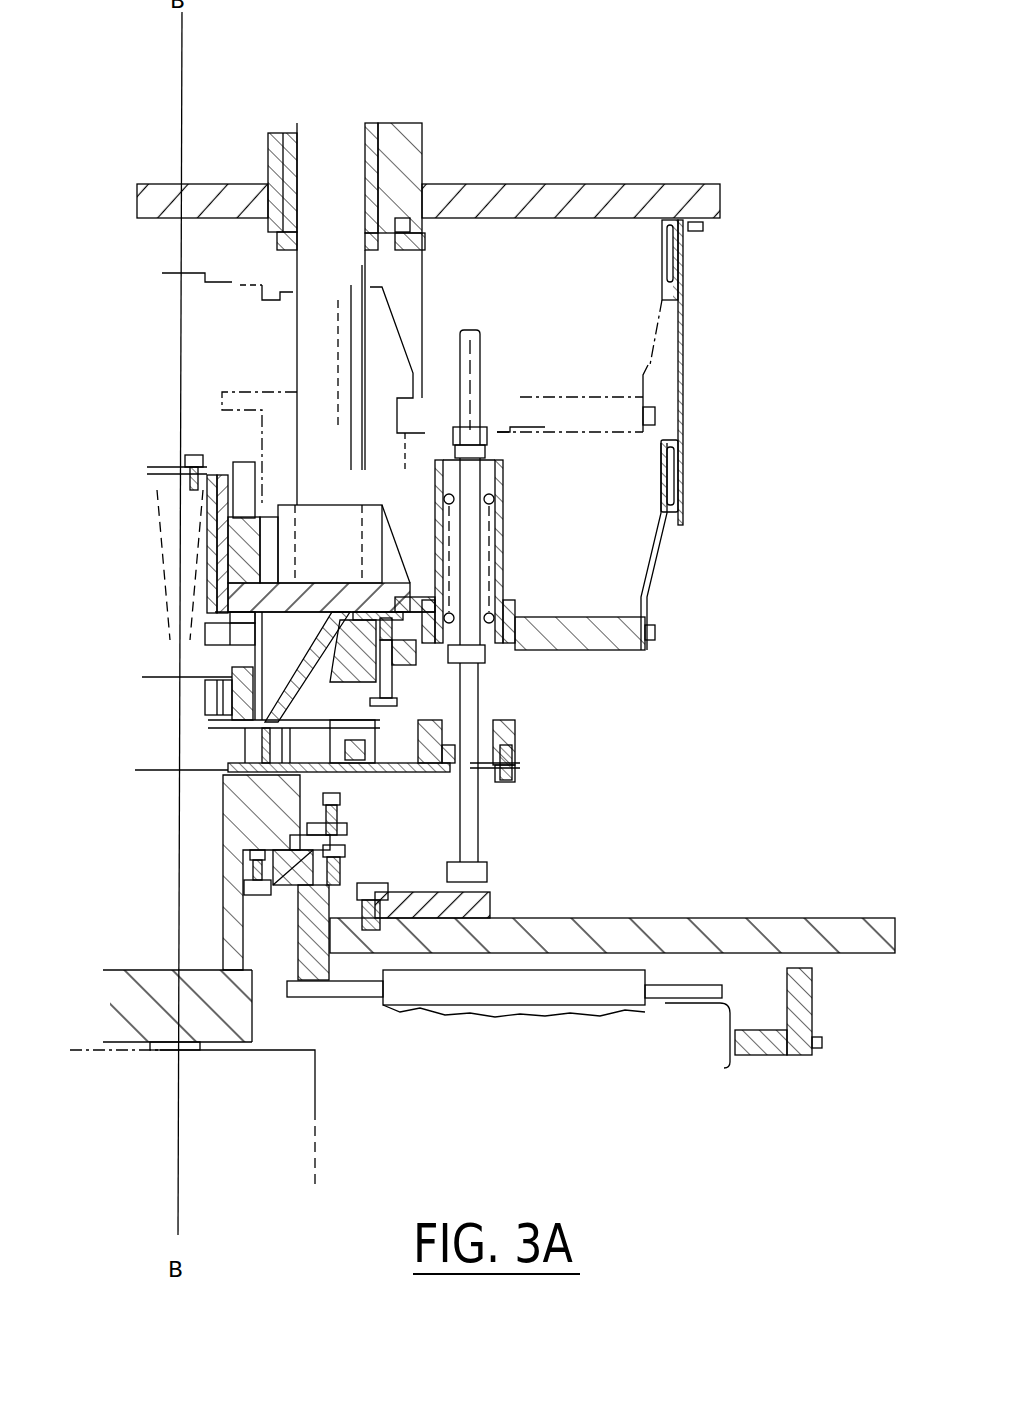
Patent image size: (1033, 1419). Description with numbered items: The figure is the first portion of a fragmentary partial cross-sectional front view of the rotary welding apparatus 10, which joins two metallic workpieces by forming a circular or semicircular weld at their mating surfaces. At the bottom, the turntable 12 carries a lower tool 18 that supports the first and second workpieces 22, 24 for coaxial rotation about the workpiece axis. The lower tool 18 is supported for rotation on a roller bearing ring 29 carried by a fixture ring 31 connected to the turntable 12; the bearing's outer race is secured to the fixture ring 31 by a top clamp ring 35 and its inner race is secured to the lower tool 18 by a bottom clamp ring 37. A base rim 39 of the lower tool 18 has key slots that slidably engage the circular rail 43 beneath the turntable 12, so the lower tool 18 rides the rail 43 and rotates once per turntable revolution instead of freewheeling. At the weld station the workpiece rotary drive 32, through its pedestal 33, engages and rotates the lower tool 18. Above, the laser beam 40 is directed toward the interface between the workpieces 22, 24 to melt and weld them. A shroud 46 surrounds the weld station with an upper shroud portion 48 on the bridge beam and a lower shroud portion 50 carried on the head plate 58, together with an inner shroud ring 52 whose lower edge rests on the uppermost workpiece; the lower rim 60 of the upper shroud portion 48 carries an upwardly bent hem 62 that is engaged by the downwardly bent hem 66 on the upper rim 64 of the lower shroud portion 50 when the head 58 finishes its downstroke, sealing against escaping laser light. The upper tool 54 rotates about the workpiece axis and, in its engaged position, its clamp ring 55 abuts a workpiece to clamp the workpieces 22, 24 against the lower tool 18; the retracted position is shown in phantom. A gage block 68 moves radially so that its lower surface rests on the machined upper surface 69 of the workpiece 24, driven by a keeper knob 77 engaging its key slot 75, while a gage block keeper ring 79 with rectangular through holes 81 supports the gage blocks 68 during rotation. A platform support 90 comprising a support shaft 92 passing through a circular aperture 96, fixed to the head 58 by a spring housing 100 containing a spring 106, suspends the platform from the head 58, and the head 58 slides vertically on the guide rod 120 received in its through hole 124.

The rotary welding apparatus 10 is at (598, 108).
The turntable 12 is at (708, 925).
The lower tool 18 is at (340, 826).
The first workpiece 22 is at (294, 670).
The second workpiece 24 is at (236, 760).
The roller bearing ring 29 is at (370, 1003).
The fixture ring 31 is at (460, 905).
The workpiece rotary drive 32 is at (283, 1093).
The pedestal 33 is at (240, 1023).
The top clamp ring 35 is at (345, 866).
The bottom clamp ring 37 is at (273, 885).
The base rim 39 is at (240, 972).
The laser beam 40 is at (200, 466).
The circular rail 43 is at (800, 1013).
The shroud 46 is at (690, 345).
The upper shroud portion 48 is at (686, 370).
The lower shroud portion 50 is at (662, 277).
The inner shroud ring 52 is at (350, 678).
The upper tool 54 is at (205, 632).
The clamp ring 55 is at (232, 678).
The head plate 58 is at (620, 625).
The lower rim 60 is at (678, 510).
The upwardly bent hem 62 is at (670, 470).
The upper rim 64 is at (662, 278).
The downwardly bent hem 66 is at (685, 262).
The gage block 68 is at (228, 712).
The machined upper surface 69 is at (232, 748).
The key slot 75 is at (318, 775).
The keeper knob 77 is at (262, 785).
The gage block keeper ring 79 is at (260, 840).
The rectangular through hole 81 is at (260, 817).
The platform support 90 is at (505, 520).
The support shaft 92 is at (478, 803).
The circular aperture 96 is at (470, 757).
The spring housing 100 is at (505, 478).
The spring 106 is at (497, 572).
The guide rod 120 is at (355, 125).
The through hole 124 is at (305, 540).